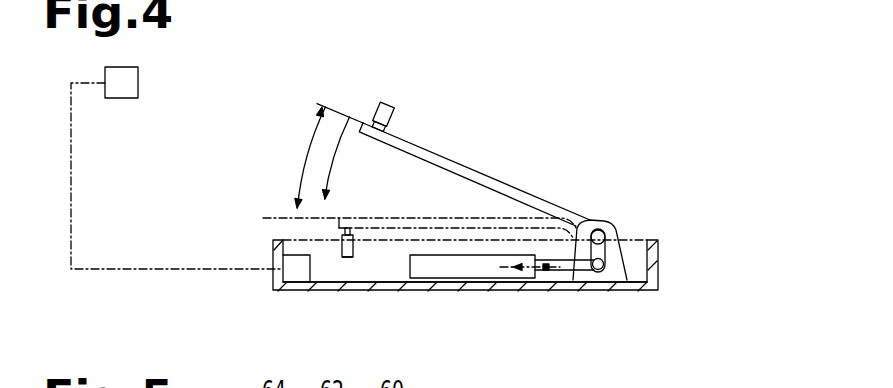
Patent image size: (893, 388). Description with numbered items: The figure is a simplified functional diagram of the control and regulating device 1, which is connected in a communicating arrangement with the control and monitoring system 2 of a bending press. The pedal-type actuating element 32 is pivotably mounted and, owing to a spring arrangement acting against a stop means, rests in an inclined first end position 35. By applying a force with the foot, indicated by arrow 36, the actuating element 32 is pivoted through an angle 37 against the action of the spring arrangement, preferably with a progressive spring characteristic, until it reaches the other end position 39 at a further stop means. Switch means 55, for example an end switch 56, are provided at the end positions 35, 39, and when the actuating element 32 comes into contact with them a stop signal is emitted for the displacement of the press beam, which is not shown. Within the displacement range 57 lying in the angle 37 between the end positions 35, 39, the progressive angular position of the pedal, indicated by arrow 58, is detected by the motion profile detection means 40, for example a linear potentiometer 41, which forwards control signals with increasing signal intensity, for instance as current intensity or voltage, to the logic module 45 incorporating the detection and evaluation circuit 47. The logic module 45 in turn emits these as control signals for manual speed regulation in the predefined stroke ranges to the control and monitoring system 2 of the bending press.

The control and regulating device 1 is at (613, 153).
The control and monitoring system 2 is at (122, 92).
The pedal-type actuating element 32 is at (427, 153).
The first end position 35 is at (338, 106).
The arrow 36 is at (478, 170).
The angle 37 is at (302, 178).
The other end position 39 is at (277, 217).
The motion profile detection means 40 is at (400, 275).
The linear potentiometer 41 is at (477, 262).
The logic module 45 is at (336, 262).
The detection and evaluation circuit 47 is at (285, 272).
The switch means 55 is at (390, 90).
The end switch 56 is at (347, 258).
The displacement range 57 is at (332, 207).
The arrow 58 is at (338, 138).